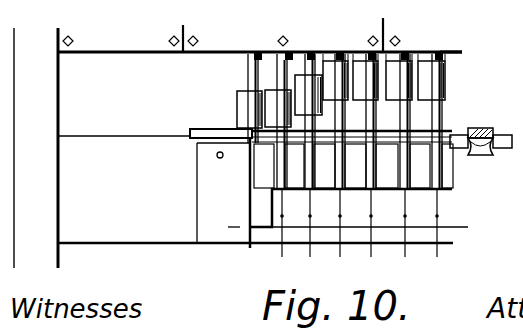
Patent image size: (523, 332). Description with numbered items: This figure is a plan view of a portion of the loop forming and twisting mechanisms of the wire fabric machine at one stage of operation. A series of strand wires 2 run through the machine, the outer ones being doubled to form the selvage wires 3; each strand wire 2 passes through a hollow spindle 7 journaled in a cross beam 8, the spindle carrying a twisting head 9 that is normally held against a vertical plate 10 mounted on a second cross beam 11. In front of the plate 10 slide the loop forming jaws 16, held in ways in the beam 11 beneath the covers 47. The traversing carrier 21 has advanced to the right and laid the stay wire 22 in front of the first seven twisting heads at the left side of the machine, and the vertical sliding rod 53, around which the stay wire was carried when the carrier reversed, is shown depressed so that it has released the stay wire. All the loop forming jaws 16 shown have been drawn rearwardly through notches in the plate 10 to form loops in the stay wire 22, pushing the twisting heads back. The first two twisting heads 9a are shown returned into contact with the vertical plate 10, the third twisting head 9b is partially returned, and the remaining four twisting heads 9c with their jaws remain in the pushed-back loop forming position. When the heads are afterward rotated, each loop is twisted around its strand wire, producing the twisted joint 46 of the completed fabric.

The strand wires 2 is at (440, 201).
The selvage wires 3 is at (250, 248).
The hollow spindle 7 is at (444, 52).
The cross beam 8 is at (118, 44).
The twisting head 9 is at (438, 78).
The first two twisting heads 9a is at (277, 100).
The third twisting head 9b is at (303, 82).
The remaining four twisting heads 9c is at (365, 65).
The vertical plate 10 is at (212, 132).
The cross beam 11 is at (143, 148).
The loop forming jaw 16 is at (400, 129).
The traversing carrier 21 is at (483, 128).
The stay wire 22 is at (437, 146).
The twisted loop 46 is at (360, 226).
The covers 47 is at (323, 182).
The vertical sliding rod 53 is at (219, 158).